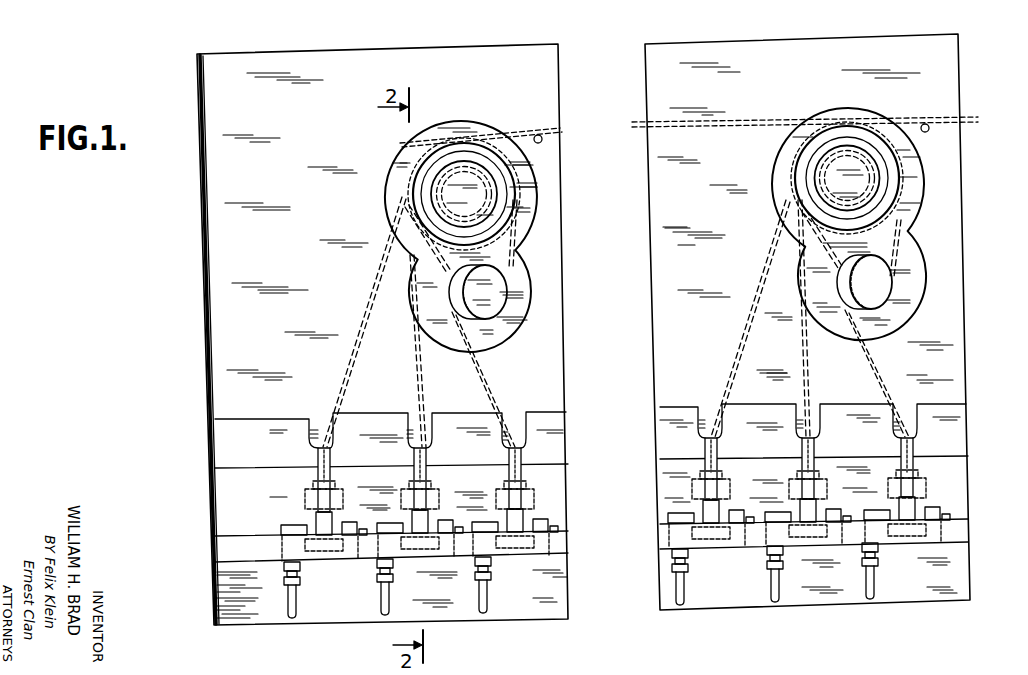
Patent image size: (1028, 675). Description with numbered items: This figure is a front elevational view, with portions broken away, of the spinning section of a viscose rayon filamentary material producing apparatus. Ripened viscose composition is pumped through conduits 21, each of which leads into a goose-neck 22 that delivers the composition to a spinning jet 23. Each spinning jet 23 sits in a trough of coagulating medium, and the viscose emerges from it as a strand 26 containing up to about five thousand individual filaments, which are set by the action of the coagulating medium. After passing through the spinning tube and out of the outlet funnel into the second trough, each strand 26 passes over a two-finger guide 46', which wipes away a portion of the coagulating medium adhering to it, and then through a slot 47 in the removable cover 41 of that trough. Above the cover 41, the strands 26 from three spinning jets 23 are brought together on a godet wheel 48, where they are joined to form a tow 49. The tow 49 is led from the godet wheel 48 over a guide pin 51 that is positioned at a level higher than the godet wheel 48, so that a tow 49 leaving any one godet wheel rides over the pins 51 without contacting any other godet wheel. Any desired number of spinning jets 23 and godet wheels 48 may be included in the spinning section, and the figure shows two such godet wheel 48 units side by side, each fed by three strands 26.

The removable cover 41 is at (215, 446).
The slot 47 is at (316, 420).
The two-finger guide 46' is at (634, 473).
The strand 26 is at (366, 355).
The godet wheel 48 is at (532, 239).
The tow 49 is at (568, 127).
The guide pin 51 is at (543, 141).
The spinning jet 23 is at (532, 488).
The goose-neck 22 is at (555, 521).
The conduit 21 is at (380, 596).